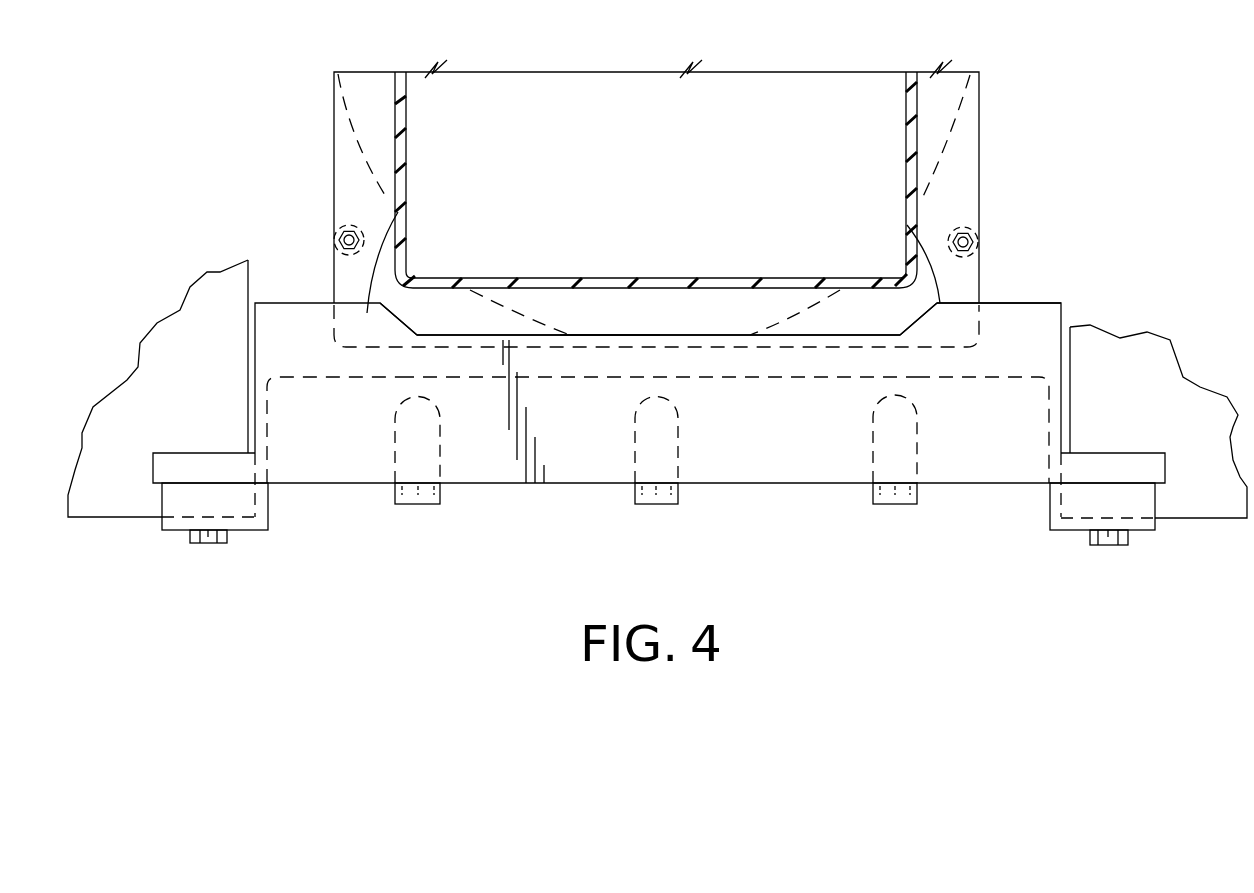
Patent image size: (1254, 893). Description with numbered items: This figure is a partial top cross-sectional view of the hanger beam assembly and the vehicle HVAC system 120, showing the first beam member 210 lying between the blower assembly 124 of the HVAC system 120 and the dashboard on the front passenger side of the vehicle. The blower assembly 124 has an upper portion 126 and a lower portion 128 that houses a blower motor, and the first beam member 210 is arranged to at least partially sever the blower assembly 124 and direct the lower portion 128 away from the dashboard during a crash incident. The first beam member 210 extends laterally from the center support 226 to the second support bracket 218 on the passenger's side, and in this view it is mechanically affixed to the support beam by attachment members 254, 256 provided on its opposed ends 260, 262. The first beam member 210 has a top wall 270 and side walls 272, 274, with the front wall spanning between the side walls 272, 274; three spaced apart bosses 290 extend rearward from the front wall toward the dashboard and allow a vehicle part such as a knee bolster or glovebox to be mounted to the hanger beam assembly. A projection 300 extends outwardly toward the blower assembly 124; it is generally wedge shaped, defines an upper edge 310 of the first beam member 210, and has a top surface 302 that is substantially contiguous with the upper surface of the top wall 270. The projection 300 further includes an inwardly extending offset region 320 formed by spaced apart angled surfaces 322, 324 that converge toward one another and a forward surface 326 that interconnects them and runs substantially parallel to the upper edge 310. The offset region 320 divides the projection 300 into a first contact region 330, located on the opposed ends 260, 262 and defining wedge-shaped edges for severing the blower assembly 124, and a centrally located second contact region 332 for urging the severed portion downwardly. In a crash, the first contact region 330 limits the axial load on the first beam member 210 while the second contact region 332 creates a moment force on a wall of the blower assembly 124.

The HVAC system 120 is at (1040, 102).
The blower assembly 124 is at (960, 175).
The upper portion 126 is at (918, 103).
The lower portion 128 is at (357, 148).
The first beam member 210 is at (558, 493).
The second support bracket 218 is at (1148, 365).
The center support 226 is at (135, 400).
The attachment member 254 is at (205, 545).
The attachment member 256 is at (1110, 548).
The end of first beam member 260 is at (280, 473).
The end of first beam member 262 is at (1033, 473).
The top wall 270 is at (762, 460).
The side wall 272 is at (248, 342).
The side wall 274 is at (1063, 320).
The boss 290 is at (413, 495).
The projection 300 is at (1010, 303).
The top surface 302 is at (310, 318).
The upper edge 310 is at (993, 298).
The offset region 320 is at (610, 335).
The angled surface 322 is at (417, 333).
The angled surface 324 is at (916, 318).
The forward surface 326 is at (660, 335).
The first contact region 330 is at (398, 212).
The second contact region 332 is at (397, 317).